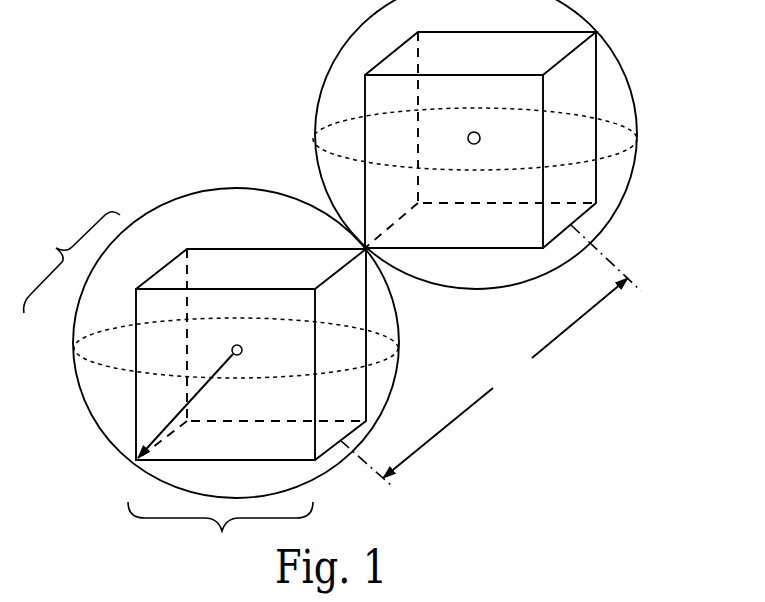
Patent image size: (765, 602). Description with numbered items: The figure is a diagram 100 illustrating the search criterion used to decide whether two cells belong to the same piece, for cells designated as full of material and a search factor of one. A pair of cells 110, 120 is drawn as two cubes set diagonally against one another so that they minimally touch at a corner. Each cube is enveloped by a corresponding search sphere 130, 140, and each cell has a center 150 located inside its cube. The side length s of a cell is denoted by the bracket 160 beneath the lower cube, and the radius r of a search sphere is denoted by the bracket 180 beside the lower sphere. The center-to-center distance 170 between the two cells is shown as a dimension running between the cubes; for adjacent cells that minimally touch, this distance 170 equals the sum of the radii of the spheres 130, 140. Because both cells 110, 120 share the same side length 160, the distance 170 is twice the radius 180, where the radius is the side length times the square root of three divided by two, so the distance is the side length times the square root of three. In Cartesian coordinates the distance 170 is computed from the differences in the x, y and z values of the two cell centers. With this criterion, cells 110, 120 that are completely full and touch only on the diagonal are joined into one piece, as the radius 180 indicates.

The diagram 100 is at (89, 80).
The cell 110 is at (485, 231).
The cell 120 is at (250, 449).
The search sphere 130 is at (625, 68).
The search sphere 140 is at (173, 198).
The center 150 is at (468, 133).
The bracket 160 is at (220, 533).
The center-to-center distance 170 is at (490, 355).
The bracket 180 is at (72, 262).